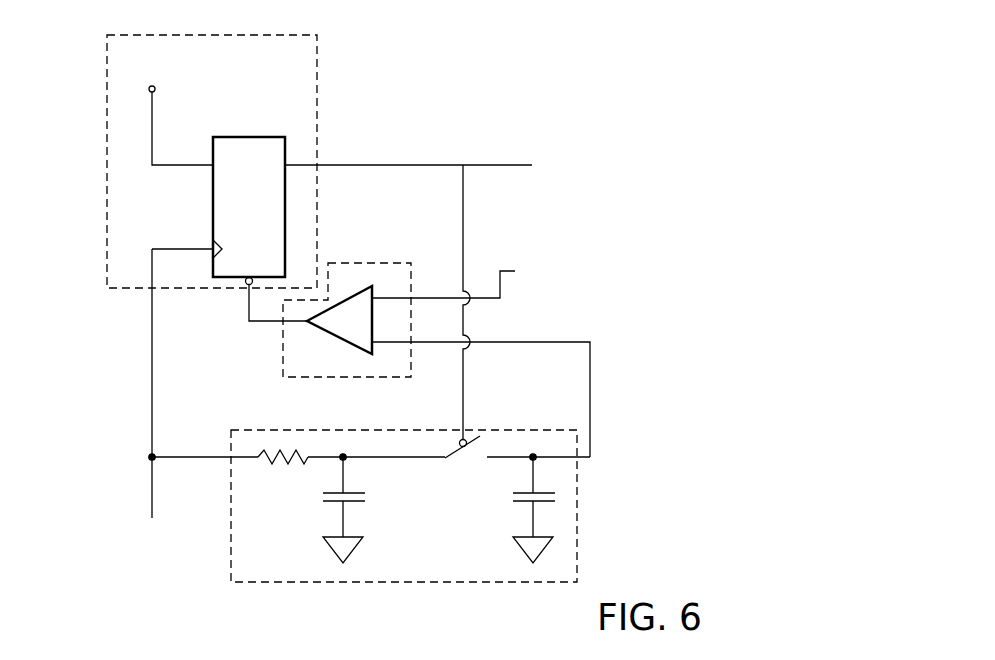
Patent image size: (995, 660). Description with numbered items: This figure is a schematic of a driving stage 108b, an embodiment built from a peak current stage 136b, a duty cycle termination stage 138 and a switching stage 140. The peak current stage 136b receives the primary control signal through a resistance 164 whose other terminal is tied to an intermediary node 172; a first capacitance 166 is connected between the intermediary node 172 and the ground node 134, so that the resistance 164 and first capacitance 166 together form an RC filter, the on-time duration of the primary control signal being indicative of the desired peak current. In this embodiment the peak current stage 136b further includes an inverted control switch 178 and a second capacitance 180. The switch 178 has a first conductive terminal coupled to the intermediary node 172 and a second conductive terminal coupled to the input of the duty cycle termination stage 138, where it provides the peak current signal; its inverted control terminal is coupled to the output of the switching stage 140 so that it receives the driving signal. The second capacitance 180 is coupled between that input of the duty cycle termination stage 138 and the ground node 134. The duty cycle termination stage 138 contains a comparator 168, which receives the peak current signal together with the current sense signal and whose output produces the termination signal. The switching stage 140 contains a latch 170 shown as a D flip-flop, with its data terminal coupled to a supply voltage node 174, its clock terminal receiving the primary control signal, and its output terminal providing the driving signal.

The driving stage 108b is at (690, 156).
The switching stage 140 is at (317, 68).
The latch 170 is at (287, 147).
The supply voltage node 174 is at (150, 90).
The duty cycle termination stage 138 is at (378, 263).
The comparator 168 is at (373, 318).
The peak current stage 136b is at (255, 430).
The intermediary node 172 is at (343, 454).
The resistance 164 is at (265, 462).
The first capacitance 166 is at (355, 492).
The inverted control switch 178 is at (472, 472).
The second capacitance 180 is at (552, 491).
The ground node 134 is at (355, 550).